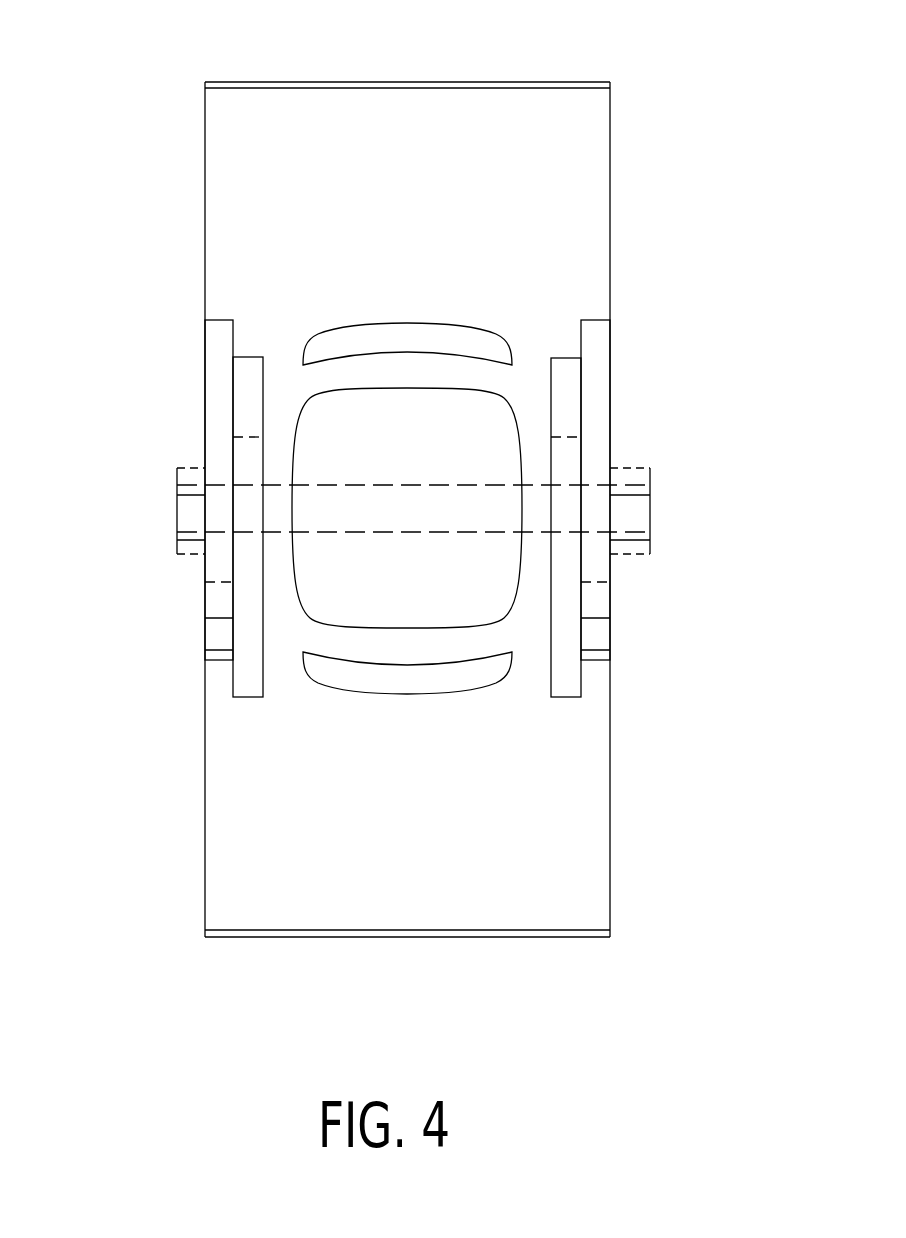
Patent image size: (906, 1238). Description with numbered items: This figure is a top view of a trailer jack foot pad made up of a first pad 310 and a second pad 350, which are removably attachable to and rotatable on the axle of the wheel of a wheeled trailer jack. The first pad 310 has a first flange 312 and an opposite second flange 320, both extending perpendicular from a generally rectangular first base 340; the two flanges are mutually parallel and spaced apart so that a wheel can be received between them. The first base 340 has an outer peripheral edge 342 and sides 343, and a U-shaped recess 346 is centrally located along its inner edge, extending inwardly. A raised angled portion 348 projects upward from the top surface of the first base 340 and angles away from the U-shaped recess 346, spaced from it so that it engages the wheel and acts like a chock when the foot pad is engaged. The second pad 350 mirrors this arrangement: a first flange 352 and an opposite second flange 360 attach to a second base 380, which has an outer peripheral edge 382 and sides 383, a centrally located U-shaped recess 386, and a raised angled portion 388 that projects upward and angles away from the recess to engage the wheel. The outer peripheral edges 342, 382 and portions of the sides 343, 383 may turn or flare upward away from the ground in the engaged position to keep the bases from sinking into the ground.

The first pad 310 is at (588, 140).
The first flange 312 is at (568, 373).
The second flange 320 is at (252, 372).
The first base 340 is at (420, 200).
The outer peripheral edge 342 is at (383, 88).
The sides 343 is at (205, 155).
The U-shaped recess 346 is at (463, 392).
The raised angled portion 348 is at (373, 337).
The second pad 350 is at (562, 788).
The first flange 352 is at (597, 378).
The second flange 360 is at (215, 362).
The second base 380 is at (430, 865).
The outer peripheral edge 382 is at (408, 937).
The sides 383 is at (205, 838).
The U-shaped recess 386 is at (412, 630).
The raised angled portion 388 is at (397, 680).